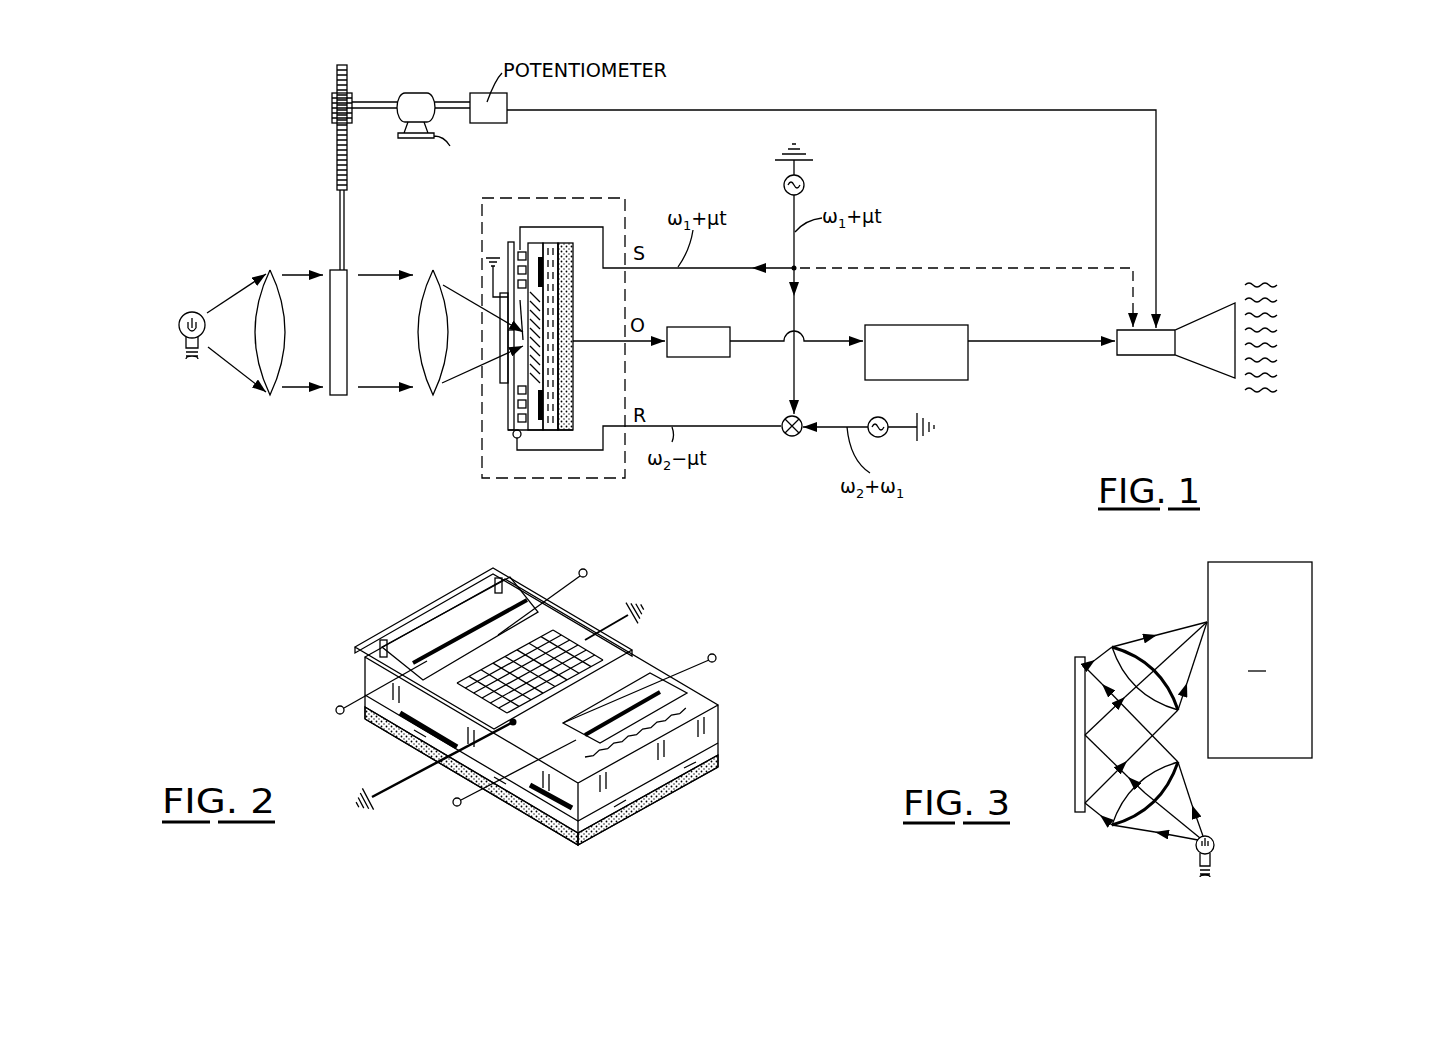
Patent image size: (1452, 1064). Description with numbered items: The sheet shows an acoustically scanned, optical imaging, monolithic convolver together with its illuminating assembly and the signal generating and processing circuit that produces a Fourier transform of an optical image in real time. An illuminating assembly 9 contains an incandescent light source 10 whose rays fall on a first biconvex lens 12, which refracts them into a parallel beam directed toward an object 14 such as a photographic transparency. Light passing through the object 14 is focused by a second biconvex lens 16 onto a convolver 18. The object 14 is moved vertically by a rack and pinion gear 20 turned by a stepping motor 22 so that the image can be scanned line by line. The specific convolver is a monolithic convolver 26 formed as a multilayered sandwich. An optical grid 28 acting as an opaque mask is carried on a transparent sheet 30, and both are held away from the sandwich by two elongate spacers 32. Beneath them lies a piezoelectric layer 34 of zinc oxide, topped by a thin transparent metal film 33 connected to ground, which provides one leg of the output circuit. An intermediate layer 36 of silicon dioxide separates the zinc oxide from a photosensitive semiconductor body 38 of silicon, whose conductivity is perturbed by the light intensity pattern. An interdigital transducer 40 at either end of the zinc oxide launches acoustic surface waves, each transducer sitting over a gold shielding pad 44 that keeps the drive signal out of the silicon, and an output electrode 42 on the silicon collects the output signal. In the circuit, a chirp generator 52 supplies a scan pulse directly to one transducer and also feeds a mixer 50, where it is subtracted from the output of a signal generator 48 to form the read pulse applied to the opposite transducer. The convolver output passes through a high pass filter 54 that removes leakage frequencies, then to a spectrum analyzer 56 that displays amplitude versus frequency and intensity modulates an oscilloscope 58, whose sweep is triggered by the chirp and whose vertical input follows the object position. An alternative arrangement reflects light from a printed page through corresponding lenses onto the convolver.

In FIG. 1, the illuminating assembly 9 is at (308, 243).
In FIG. 1, the incandescent light source 10 is at (190, 313).
In FIG. 3, the incandescent light source 10 is at (1213, 842).
In FIG. 1, the first biconvex lens 12 is at (268, 378).
In FIG. 3, the first biconvex lens 12 is at (1170, 780).
In FIG. 1, the object 14 is at (340, 367).
In FIG. 3, the object 14 is at (1075, 717).
In FIG. 1, the second biconvex lens 16 is at (420, 327).
In FIG. 3, the second biconvex lens 16 is at (1128, 658).
In FIG. 1, the convolver 18 is at (470, 481).
In FIG. 3, the convolver 18 is at (1260, 660).
In FIG. 1, the rack and pinion gear 20 is at (348, 128).
In FIG. 1, the stepping motor 22 is at (417, 102).
In FIG. 1, the monolithic convolver 26 is at (477, 496).
In FIG. 2, the monolithic convolver 26 is at (358, 622).
In FIG. 1, the optical grid 28 is at (508, 340).
In FIG. 2, the optical grid 28 is at (630, 665).
In FIG. 1, the transparent sheet 30 is at (510, 412).
In FIG. 2, the transparent sheet 30 is at (485, 580).
In FIG. 1, the elongate spacers 32 is at (512, 240).
In FIG. 2, the elongate spacers 32 is at (445, 620).
In FIG. 1, the thin transparent metal film 33 is at (527, 287).
In FIG. 2, the thin transparent metal film 33 is at (630, 680).
In FIG. 1, the piezoelectric layer 34 is at (537, 243).
In FIG. 2, the piezoelectric layer 34 is at (720, 728).
In FIG. 1, the intermediate layer 36 is at (548, 243).
In FIG. 2, the intermediate layer 36 is at (720, 753).
In FIG. 1, the photosensitive semiconductor body 38 is at (563, 243).
In FIG. 2, the photosensitive semiconductor body 38 is at (705, 772).
In FIG. 1, the interdigital transducer 40 is at (522, 266).
In FIG. 2, the interdigital transducer 40 is at (377, 657).
In FIG. 1, the output electrode 42 is at (570, 383).
In FIG. 2, the output electrode 42 is at (623, 810).
In FIG. 1, the gold shielding pad 44 is at (546, 272).
In FIG. 2, the gold shielding pad 44 is at (420, 722).
In FIG. 1, the signal generator 48 is at (880, 437).
In FIG. 1, the mixer 50 is at (792, 436).
In FIG. 1, the chirp generator 52 is at (805, 190).
In FIG. 1, the high pass filter 54 is at (711, 327).
In FIG. 1, the spectrum analyzer 56 is at (968, 364).
In FIG. 1, the oscilloscope 58 is at (1207, 353).